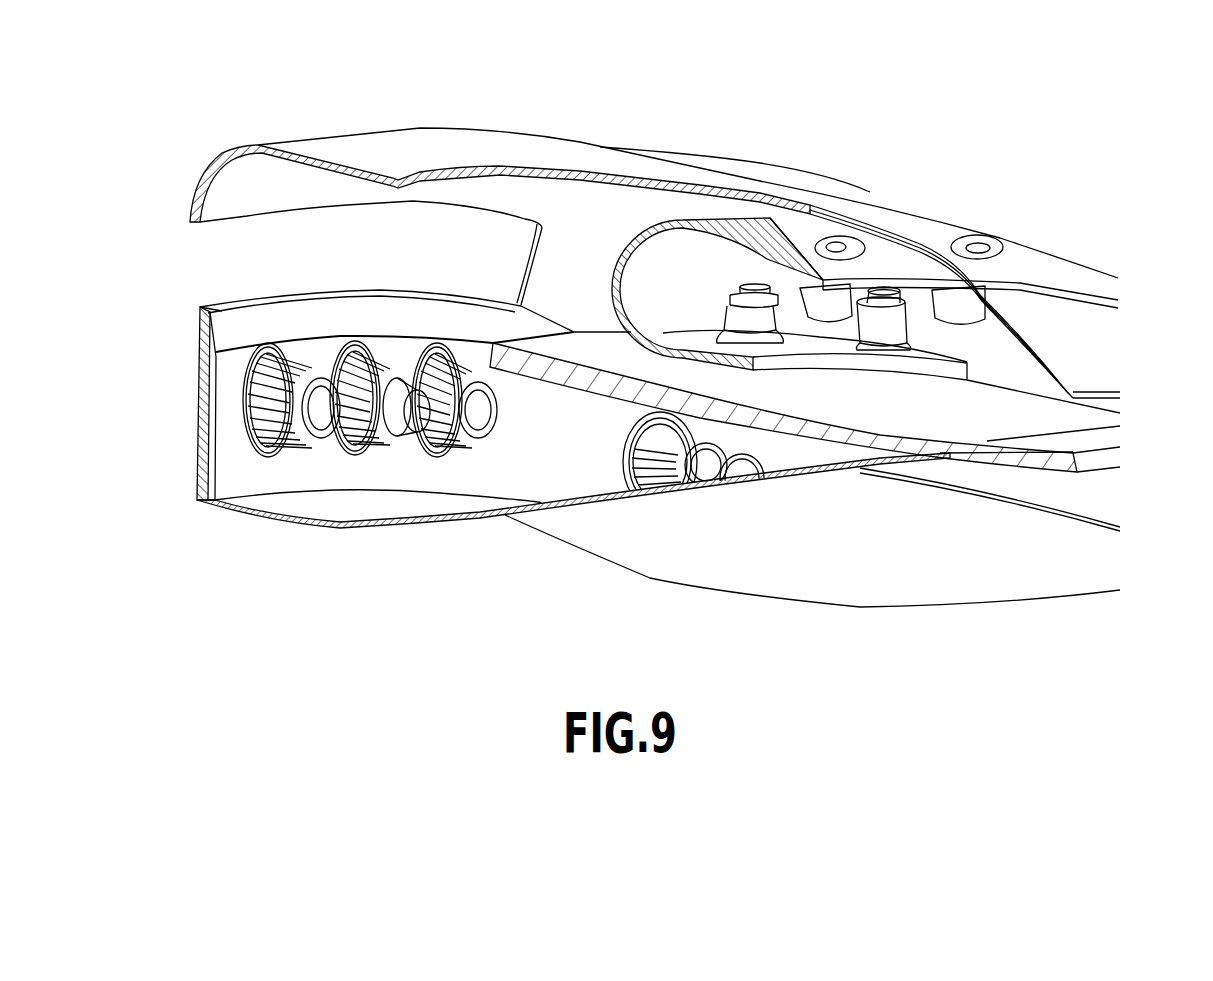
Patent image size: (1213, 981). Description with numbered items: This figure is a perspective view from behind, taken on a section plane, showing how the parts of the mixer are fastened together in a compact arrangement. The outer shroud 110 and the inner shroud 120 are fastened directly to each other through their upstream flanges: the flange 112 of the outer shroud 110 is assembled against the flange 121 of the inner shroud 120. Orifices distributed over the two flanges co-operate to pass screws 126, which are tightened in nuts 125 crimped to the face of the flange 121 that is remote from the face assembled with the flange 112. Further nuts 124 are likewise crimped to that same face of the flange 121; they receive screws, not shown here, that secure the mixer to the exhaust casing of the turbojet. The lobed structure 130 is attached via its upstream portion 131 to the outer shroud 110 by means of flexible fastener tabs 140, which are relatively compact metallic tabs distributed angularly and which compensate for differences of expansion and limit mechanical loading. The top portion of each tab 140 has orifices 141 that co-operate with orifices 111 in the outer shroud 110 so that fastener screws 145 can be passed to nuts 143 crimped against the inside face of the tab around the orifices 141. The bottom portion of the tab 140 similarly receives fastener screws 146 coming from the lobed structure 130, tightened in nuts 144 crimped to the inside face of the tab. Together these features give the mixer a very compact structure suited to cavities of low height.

The outer shroud 110 is at (495, 146).
The orifices 111 is at (950, 276).
The flange 112 is at (257, 320).
The inner shroud 120 is at (470, 522).
The flange 121 is at (228, 460).
The nuts 124 is at (250, 387).
The nuts 125 is at (400, 338).
The screws 126 is at (407, 423).
The lobed structure 130 is at (1116, 434).
The upstream portion 131 is at (998, 397).
The flexible fastener tabs 140 is at (707, 200).
The orifices 141 is at (812, 243).
The nuts 143 is at (823, 316).
The nuts 144 is at (733, 313).
The fastener screws 145 is at (840, 247).
The fastener screws 146 is at (885, 290).